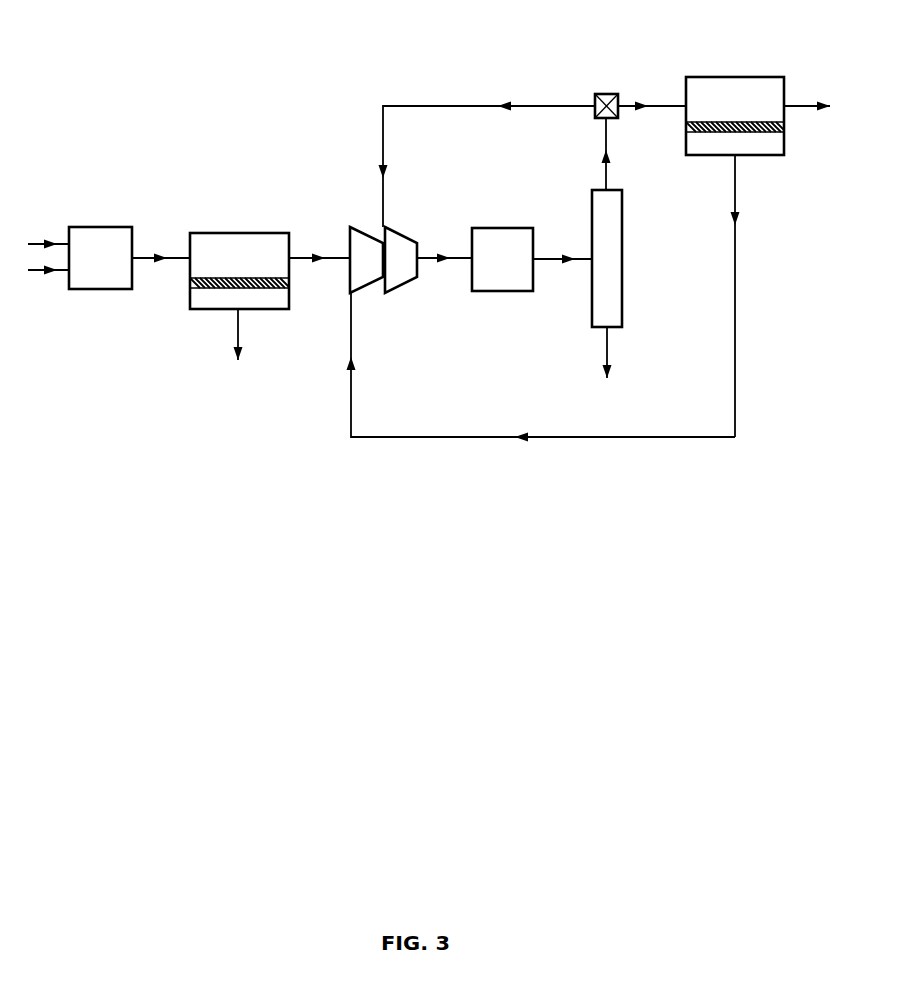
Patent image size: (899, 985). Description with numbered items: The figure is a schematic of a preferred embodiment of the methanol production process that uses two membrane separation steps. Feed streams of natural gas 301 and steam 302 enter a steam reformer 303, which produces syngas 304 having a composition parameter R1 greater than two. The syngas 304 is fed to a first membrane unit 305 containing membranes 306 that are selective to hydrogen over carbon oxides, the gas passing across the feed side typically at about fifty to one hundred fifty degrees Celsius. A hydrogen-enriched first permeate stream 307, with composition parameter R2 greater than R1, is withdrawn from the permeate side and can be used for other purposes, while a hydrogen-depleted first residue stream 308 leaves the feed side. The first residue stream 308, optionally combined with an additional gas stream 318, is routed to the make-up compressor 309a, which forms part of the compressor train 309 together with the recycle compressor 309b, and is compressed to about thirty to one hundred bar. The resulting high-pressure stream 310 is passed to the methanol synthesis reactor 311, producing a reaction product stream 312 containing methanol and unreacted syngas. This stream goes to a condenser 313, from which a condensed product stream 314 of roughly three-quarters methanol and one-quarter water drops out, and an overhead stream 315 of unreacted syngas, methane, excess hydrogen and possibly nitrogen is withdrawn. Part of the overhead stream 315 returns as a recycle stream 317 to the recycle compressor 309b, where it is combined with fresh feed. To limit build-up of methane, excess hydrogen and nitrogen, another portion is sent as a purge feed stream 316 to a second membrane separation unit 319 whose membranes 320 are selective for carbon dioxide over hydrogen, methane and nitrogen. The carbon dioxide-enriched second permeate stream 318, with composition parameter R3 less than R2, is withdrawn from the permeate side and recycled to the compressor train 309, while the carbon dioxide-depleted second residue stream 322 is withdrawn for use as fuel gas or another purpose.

The natural gas feed stream 301 is at (48, 234).
The steam feed stream 302 is at (48, 283).
The steam reformer 303 is at (98, 290).
The syngas 304 is at (161, 282).
The first membrane unit 305 is at (228, 233).
The membranes 306 is at (290, 284).
The first permeate stream 307 is at (239, 359).
The first residue stream 308 is at (319, 248).
The compressor train 309 is at (377, 252).
The make-up compressor 309a is at (357, 226).
The recycle compressor 309b is at (400, 226).
The high-pressure stream 310 is at (444, 270).
The methanol synthesis reactor 311 is at (500, 292).
The reaction product stream 312 is at (562, 270).
The condenser 313 is at (622, 275).
The condensed product stream 314 is at (607, 364).
The overhead stream 315 is at (621, 142).
The feed stream to second membrane unit 316 is at (652, 95).
The recycle stream 317 is at (487, 152).
The second permeate stream 318 is at (541, 394).
The second membrane separation unit 319 is at (722, 77).
The membranes 320 is at (784, 128).
The second residue stream 322 is at (826, 108).